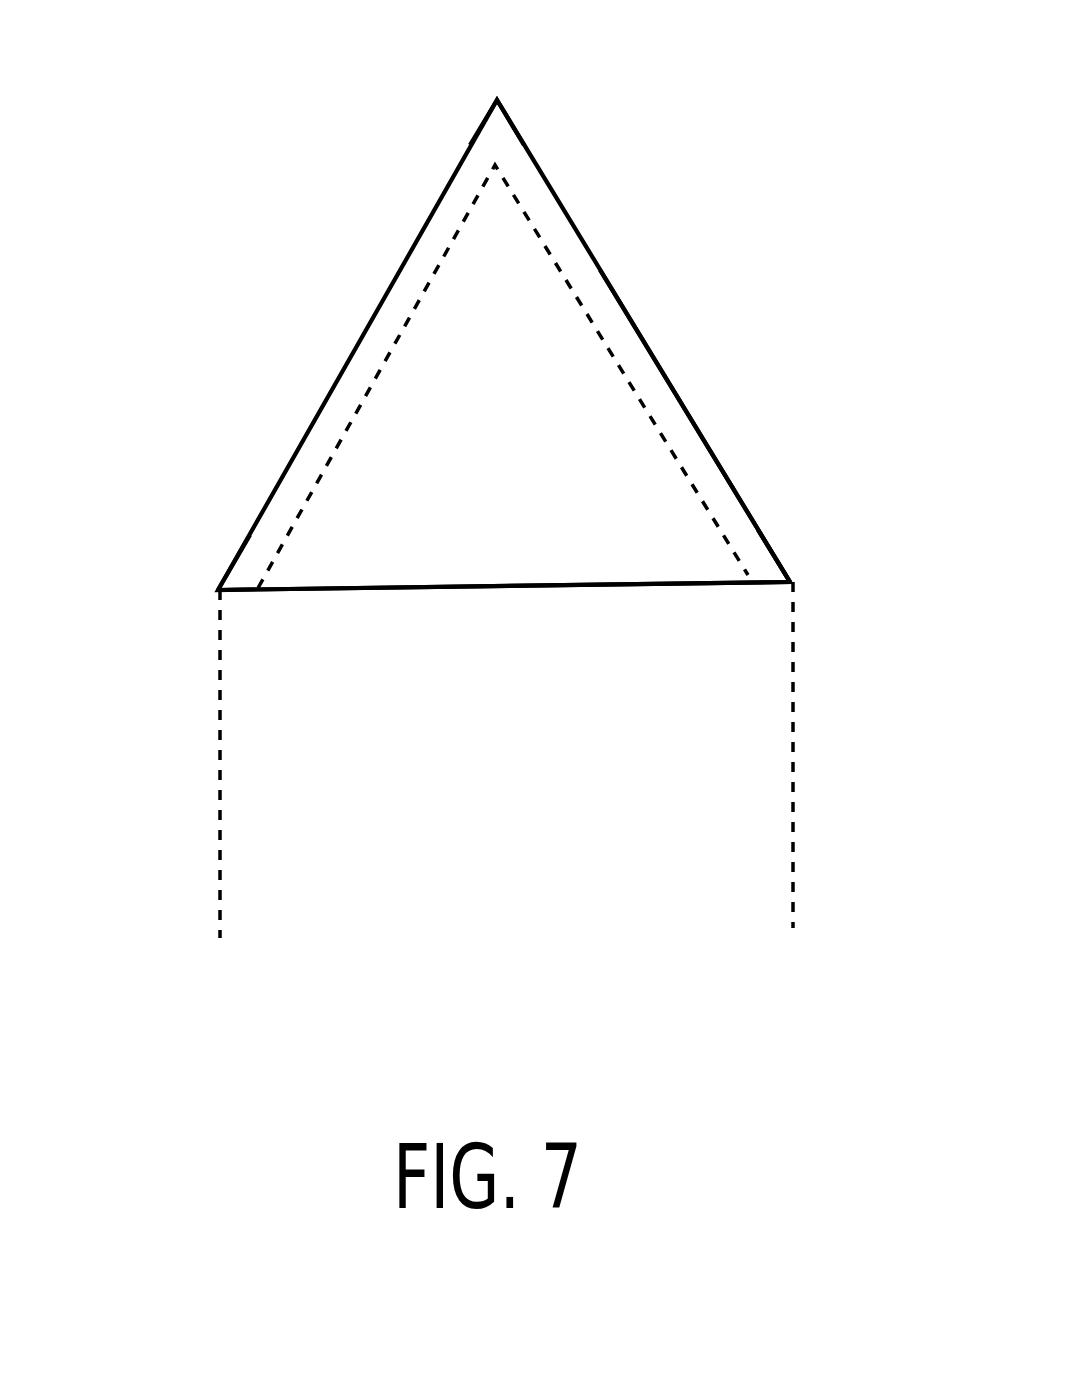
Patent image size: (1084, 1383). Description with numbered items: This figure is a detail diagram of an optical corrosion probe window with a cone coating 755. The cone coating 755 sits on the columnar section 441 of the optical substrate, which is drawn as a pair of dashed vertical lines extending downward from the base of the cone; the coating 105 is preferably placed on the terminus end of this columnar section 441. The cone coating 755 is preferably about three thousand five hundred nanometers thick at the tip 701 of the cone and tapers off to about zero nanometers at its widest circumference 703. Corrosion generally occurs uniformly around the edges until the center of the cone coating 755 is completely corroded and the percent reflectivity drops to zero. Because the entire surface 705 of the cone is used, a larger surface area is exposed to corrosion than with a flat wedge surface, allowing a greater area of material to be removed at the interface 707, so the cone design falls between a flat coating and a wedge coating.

The tip 701 is at (497, 100).
The widest circumference 703 is at (218, 588).
The surface of the cone 705 is at (352, 353).
The coating 105 is at (697, 421).
The cone coating 755 is at (531, 478).
The interface 707 is at (236, 592).
The columnar section 441 is at (795, 797).